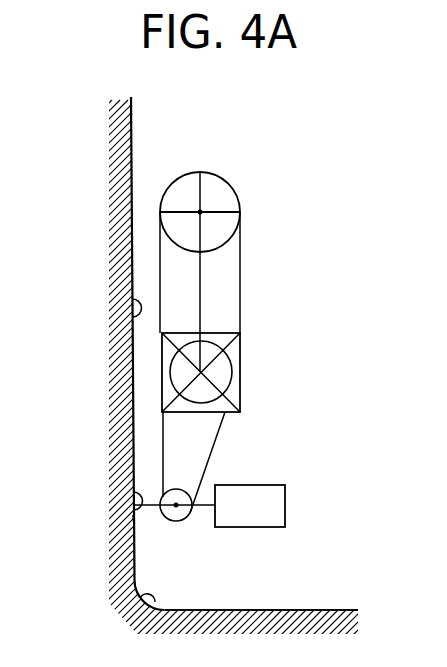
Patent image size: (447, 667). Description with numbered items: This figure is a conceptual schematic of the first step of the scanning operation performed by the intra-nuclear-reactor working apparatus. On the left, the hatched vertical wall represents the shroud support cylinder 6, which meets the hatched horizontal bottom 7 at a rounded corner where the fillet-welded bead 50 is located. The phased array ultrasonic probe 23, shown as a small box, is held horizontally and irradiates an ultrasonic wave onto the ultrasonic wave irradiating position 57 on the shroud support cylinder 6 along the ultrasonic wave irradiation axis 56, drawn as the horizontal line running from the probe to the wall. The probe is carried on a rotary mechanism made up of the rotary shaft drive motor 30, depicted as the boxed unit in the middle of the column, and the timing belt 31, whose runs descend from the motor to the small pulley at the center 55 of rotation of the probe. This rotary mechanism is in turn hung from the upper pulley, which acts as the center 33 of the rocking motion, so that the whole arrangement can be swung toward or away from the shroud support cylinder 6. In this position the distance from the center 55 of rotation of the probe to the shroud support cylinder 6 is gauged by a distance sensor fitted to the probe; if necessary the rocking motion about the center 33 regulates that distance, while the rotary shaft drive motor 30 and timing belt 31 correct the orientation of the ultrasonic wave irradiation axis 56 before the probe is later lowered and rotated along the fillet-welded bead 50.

The shroud support cylinder 6 is at (130, 314).
The bottom wall 7 is at (293, 609).
The phased array ultrasonic probe 23 is at (265, 497).
The rotary shaft drive motor 30 is at (237, 347).
The timing belt 31 is at (232, 422).
The center of the rocking motion 33 is at (200, 212).
The fillet-welded bead 50 is at (117, 604).
The center of rotation of the probe 55 is at (176, 505).
The ultrasonic wave irradiation axis 56 is at (130, 522).
The ultrasonic wave irradiating position 57 is at (130, 484).